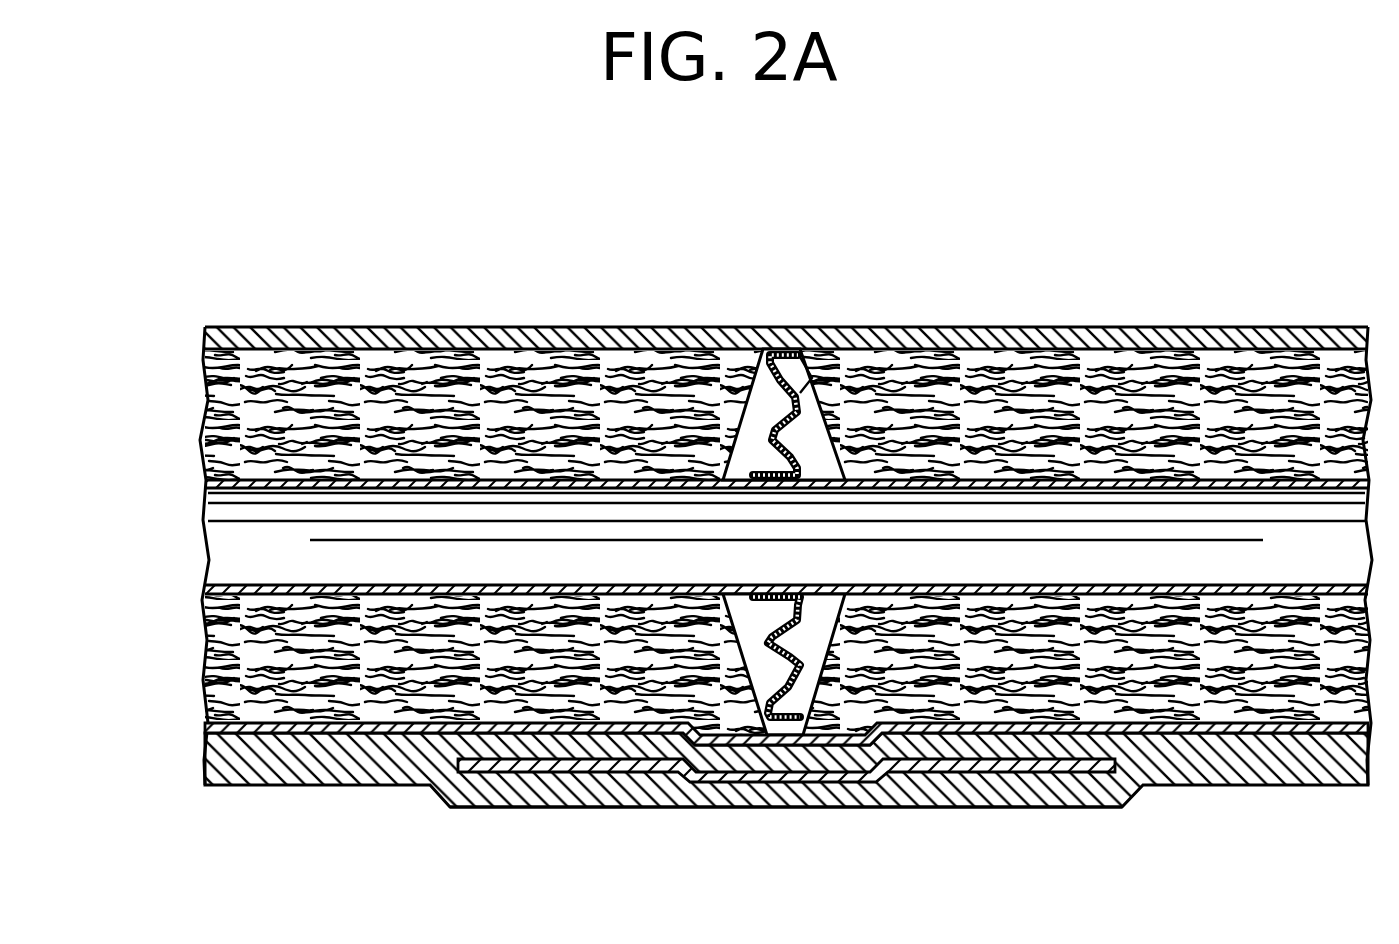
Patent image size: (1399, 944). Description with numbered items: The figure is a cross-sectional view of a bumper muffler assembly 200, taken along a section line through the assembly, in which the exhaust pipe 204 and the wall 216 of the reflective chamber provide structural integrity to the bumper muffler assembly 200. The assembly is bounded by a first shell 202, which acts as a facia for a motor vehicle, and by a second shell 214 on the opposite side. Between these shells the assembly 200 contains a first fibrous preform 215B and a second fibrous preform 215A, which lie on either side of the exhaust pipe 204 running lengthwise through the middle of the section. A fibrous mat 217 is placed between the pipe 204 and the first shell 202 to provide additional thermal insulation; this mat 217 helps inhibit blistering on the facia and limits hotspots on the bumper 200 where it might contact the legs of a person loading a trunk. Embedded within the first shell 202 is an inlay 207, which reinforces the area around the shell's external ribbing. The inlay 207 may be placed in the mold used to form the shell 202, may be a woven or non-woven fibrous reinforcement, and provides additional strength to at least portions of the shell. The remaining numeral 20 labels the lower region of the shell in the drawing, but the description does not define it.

The bumper muffler assembly 200 is at (694, 270).
The second shell 214 is at (1193, 327).
The fibrous preform 215B is at (205, 388).
The exhaust pipe 204 is at (218, 538).
The fibrous preform 215A is at (205, 655).
The wall of the reflective chamber 216 is at (803, 362).
The fibrous mat 217 is at (205, 727).
The first shell 202 is at (1235, 786).
The inlay 207 is at (560, 766).
The base layer 20 is at (935, 808).